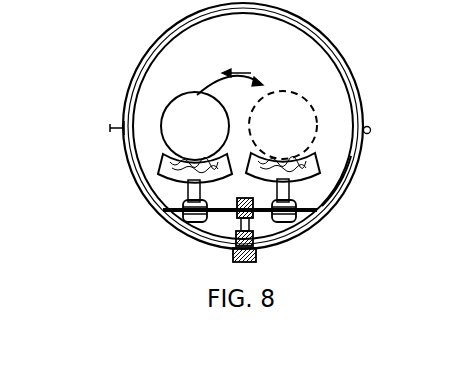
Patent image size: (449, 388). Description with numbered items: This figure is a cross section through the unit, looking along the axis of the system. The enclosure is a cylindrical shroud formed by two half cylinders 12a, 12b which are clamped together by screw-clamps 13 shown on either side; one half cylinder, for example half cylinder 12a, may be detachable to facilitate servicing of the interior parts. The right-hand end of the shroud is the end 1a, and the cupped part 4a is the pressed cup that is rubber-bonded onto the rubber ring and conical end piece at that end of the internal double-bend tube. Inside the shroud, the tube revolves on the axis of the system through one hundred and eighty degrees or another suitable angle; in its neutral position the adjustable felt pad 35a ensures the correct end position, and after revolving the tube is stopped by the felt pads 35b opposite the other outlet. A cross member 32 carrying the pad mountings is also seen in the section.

The cupped part 4a is at (327, 42).
The end of the shroud 1a is at (338, 62).
The half cylinder 12a is at (357, 82).
The half cylinder 12b is at (337, 197).
The screw-clamp 13 is at (110, 128).
The adjustable felt pad 35a is at (165, 168).
The felt pad 35b is at (310, 171).
The cross bar 32 is at (163, 218).